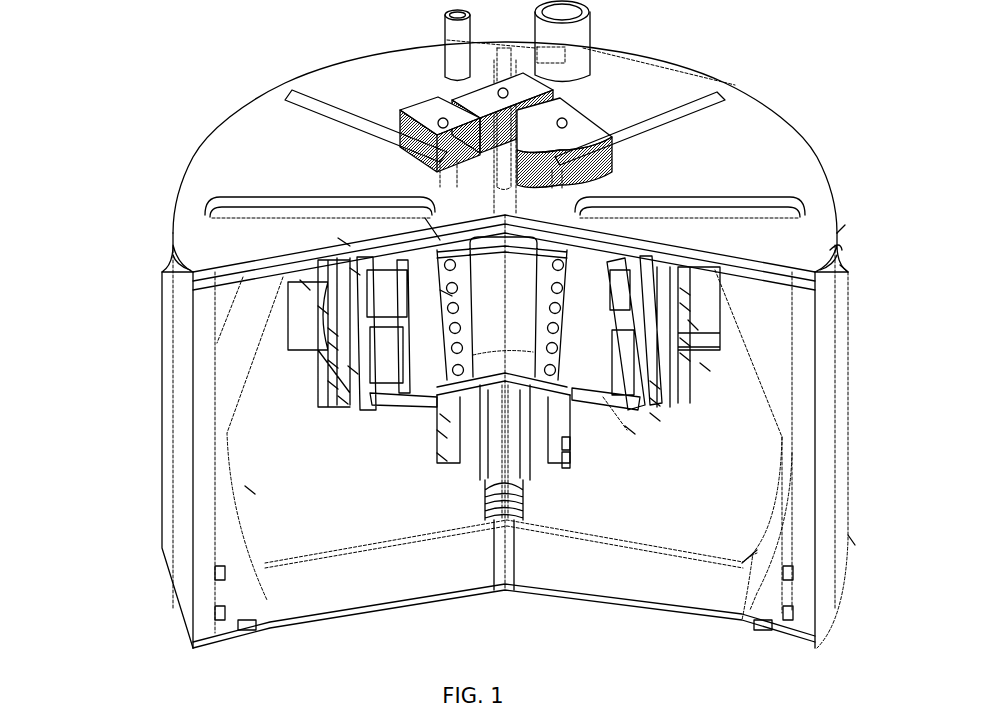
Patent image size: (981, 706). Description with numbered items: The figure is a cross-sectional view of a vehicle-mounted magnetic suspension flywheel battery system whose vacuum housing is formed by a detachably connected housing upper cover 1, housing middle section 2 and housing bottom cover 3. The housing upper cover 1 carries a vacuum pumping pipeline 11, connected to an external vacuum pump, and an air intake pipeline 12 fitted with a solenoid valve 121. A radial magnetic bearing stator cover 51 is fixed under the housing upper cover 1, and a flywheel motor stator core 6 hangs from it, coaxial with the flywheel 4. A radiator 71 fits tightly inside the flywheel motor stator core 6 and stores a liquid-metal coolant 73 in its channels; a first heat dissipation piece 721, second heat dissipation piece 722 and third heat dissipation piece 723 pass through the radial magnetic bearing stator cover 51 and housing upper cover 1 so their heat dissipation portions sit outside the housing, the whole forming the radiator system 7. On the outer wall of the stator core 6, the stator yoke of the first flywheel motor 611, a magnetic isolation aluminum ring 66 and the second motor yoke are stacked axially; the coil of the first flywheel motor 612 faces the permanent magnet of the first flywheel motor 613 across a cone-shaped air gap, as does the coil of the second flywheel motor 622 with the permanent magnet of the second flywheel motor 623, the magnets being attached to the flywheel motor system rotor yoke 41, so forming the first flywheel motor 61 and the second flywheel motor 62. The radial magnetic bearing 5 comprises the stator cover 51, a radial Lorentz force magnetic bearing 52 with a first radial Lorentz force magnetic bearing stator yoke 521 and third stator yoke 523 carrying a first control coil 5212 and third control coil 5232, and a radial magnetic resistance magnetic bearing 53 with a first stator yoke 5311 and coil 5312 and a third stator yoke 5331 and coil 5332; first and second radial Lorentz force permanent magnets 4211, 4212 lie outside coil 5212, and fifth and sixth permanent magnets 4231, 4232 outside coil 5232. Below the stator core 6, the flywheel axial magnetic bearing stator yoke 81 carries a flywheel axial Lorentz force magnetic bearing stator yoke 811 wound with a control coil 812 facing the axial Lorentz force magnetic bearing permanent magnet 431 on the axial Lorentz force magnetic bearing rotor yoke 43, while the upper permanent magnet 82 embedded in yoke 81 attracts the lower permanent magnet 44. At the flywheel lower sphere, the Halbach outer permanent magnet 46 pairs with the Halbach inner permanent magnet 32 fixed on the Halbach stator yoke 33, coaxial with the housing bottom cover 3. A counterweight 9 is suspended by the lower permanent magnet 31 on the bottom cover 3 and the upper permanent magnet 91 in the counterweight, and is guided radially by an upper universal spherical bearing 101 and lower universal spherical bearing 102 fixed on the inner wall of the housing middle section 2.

The housing upper cover 1 is at (232, 135).
The vacuum pumping pipeline 11 is at (445, 43).
The air intake pipeline 12 is at (587, 82).
The solenoid valve 121 is at (597, 37).
The housing middle section 2 is at (155, 480).
The housing bottom cover 3 is at (190, 645).
The counterweight axial passive magnetic bearing lower permanent magnet 31 is at (240, 628).
The flywheel axial Halbach axial passive magnetic bearing inner permanent magnet 32 is at (485, 540).
The flywheel axial Halbach passive magnetic bearing stator yoke 33 is at (560, 562).
The flywheel 4 is at (250, 490).
The flywheel motor system rotor yoke 41 is at (440, 293).
The axial Lorentz force magnetic bearing rotor yoke 43 is at (437, 433).
The axial Lorentz force magnetic bearing permanent magnet 431 is at (440, 418).
The flywheel axial passive magnetic bearing lower permanent magnet 44 is at (600, 540).
The flywheel axial Halbach axial passive magnetic bearing outer permanent magnet 46 is at (485, 512).
The first radial Lorentz force magnetic bearing permanent magnet 4211 is at (350, 370).
The second radial Lorentz force magnetic bearing permanent magnet 4212 is at (330, 385).
The fifth radial Lorentz force magnetic bearing permanent magnet 4231 is at (660, 385).
The sixth radial Lorentz force magnetic bearing permanent magnet 4232 is at (660, 417).
The radial magnetic bearing 5 is at (435, 198).
The radial magnetic bearing stator cover 51 is at (300, 258).
The radial Lorentz force magnetic bearing 52 is at (760, 282).
The radial magnetic resistance magnetic bearing 53 is at (300, 282).
The first radial Lorentz force magnetic bearing stator yoke 521 is at (355, 272).
The third radial Lorentz force magnetic bearing stator yoke 523 is at (690, 293).
The first radial Lorentz force magnetic bearing control coil 5212 is at (340, 400).
The third radial Lorentz force magnetic bearing control coil 5232 is at (660, 402).
The first radial magnetic resistance magnetic bearing stator yoke 5311 is at (330, 332).
The first radial magnetic resistance magnetic bearing control coil 5312 is at (330, 345).
The third radial magnetic resistance magnetic bearing stator yoke 5331 is at (690, 307).
The third radial magnetic resistance magnetic bearing control coil 5332 is at (690, 342).
The flywheel motor stator core 6 is at (345, 242).
The first flywheel motor 61 is at (320, 310).
The second flywheel motor 62 is at (330, 363).
The magnetic isolation aluminum ring 66 is at (690, 325).
The stator yoke of the first flywheel motor 611 is at (700, 250).
The coil of the first flywheel motor 612 is at (633, 222).
The permanent magnet of the first flywheel motor 613 is at (760, 270).
The coil of the second flywheel motor 622 is at (690, 357).
The permanent magnet of the second flywheel motor 623 is at (700, 367).
The radiator system 7 is at (573, 180).
The radiator 71 is at (587, 192).
The first heat dissipation piece 721 is at (437, 185).
The second heat dissipation piece 722 is at (550, 90).
The third heat dissipation piece 723 is at (580, 127).
The coolant 73 is at (430, 225).
The flywheel axial magnetic bearing stator yoke 81 is at (630, 430).
The flywheel axial Lorentz force magnetic bearing stator yoke 811 is at (580, 443).
The flywheel axial Lorentz force magnetic bearing control coil 812 is at (580, 453).
The flywheel axial passive magnetic bearing upper permanent magnet 82 is at (437, 457).
The counterweight 9 is at (560, 585).
The counterweight axial passive magnetic bearing upper permanent magnet 91 is at (700, 618).
The upper universal spherical bearing 101 is at (215, 573).
The lower universal spherical bearing 102 is at (215, 612).